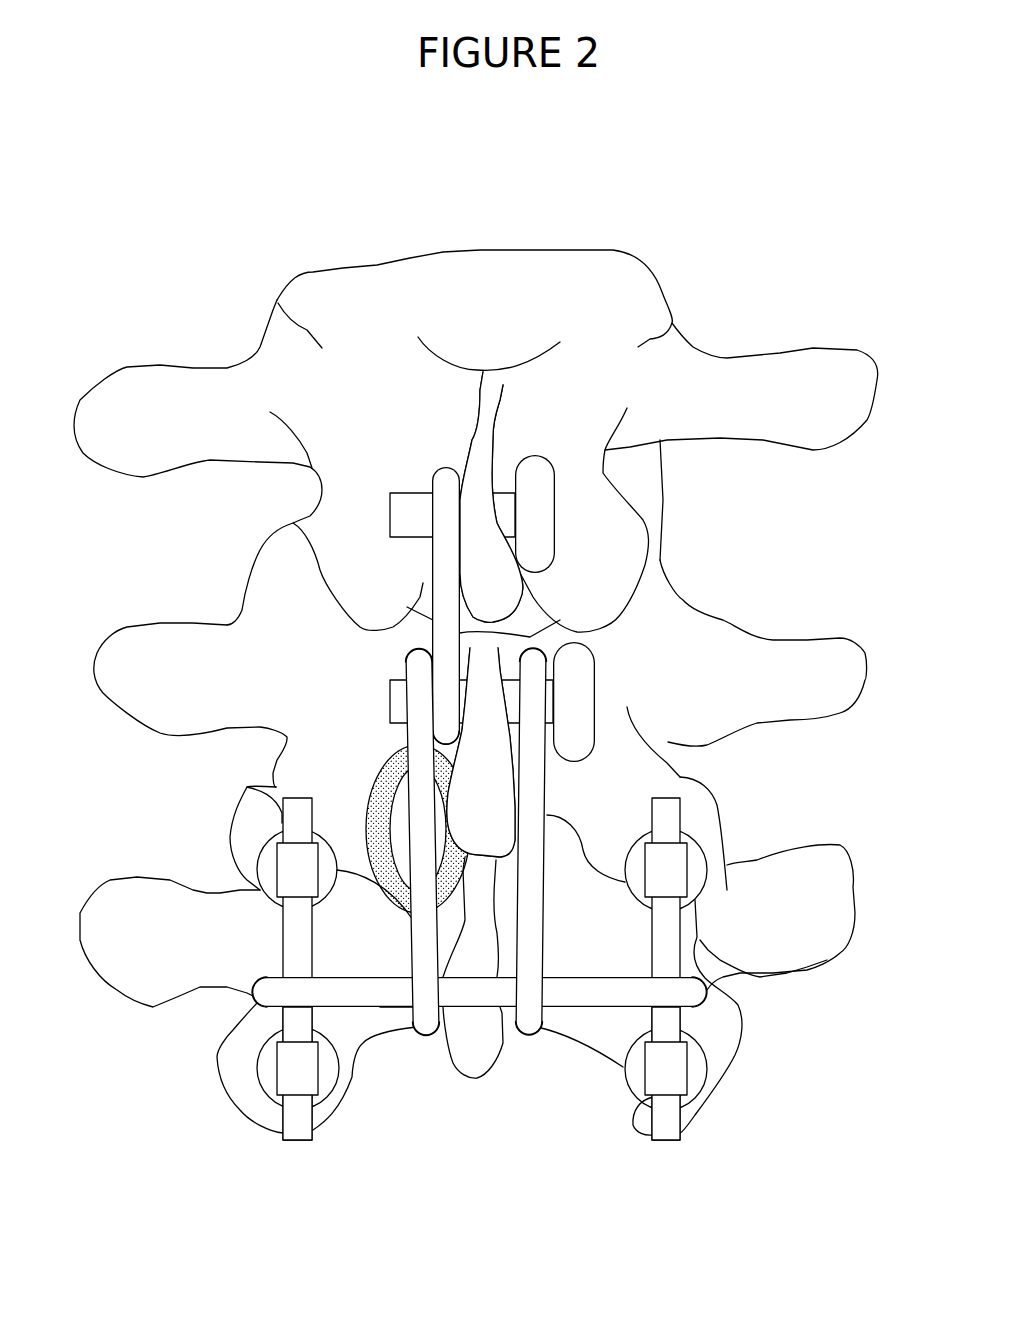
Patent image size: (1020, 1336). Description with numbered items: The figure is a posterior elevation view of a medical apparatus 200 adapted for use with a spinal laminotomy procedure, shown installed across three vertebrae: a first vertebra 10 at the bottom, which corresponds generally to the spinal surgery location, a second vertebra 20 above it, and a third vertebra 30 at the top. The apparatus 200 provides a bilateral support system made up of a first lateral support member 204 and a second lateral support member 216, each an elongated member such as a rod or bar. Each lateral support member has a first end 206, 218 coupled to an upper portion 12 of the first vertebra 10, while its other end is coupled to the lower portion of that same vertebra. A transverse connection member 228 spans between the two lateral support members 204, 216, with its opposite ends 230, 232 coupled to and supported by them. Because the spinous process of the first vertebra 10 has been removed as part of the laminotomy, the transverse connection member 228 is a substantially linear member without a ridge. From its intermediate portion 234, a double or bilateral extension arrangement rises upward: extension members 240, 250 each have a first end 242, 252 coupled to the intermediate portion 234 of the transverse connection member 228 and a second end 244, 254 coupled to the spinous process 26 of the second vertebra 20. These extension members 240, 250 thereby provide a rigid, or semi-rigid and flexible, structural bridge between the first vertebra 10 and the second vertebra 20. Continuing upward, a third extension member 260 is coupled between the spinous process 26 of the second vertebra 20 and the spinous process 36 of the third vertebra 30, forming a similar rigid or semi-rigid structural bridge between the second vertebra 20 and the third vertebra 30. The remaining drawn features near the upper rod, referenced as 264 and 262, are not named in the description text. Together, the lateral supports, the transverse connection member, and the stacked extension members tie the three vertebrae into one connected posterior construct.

The medical apparatus 200 is at (712, 254).
The third vertebra 30 is at (476, 410).
The second vertebra 20 is at (480, 740).
The first vertebra 10 is at (468, 956).
The upper portion 12 is at (203, 903).
The spinous process 36 is at (480, 370).
The spinous process 26 is at (488, 657).
The upper rod 264 is at (440, 477).
The third extension member 260 is at (433, 600).
The rod connector 262 is at (443, 737).
The first end 206 is at (232, 951).
The first lateral support member 204 is at (293, 953).
The first end 218 is at (711, 946).
The second lateral support member 216 is at (680, 927).
The end 230 is at (471, 1082).
The transverse connection member 228 is at (247, 1034).
The end 232 is at (693, 993).
The intermediate portion 234 is at (398, 993).
The extension member 240 is at (409, 933).
The first end 242 is at (430, 1027).
The second end 244 is at (407, 657).
The extension member 250 is at (586, 885).
The first end 252 is at (532, 1030).
The second end 254 is at (535, 664).